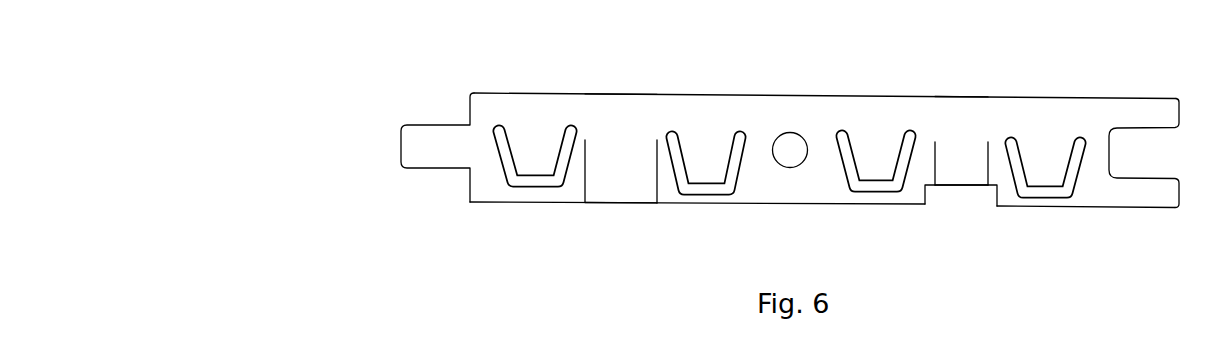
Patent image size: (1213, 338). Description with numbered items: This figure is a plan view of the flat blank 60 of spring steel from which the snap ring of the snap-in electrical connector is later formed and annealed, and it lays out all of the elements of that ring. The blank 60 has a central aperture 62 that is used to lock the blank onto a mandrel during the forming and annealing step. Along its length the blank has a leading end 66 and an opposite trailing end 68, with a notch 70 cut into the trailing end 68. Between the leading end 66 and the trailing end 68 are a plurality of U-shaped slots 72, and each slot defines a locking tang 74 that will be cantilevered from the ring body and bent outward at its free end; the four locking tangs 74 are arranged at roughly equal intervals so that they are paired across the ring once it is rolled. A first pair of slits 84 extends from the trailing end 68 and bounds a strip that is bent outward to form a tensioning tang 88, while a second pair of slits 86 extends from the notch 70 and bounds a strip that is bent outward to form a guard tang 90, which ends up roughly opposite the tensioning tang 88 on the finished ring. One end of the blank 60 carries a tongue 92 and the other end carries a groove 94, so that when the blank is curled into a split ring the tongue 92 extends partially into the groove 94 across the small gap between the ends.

The blank 60 is at (726, 147).
The central aperture 62 is at (790, 150).
The leading end 66 is at (621, 93).
The trailing end 68 is at (898, 206).
The notch 70 is at (957, 197).
The U-shaped slots 72 is at (524, 178).
The locking tangs 74 is at (708, 158).
The first pair of slits 84 is at (656, 142).
The second pair of slits 86 is at (938, 170).
The tensioning tang 88 is at (609, 180).
The guard tang 90 is at (948, 173).
The tongue 92 is at (422, 157).
The groove 94 is at (1131, 166).